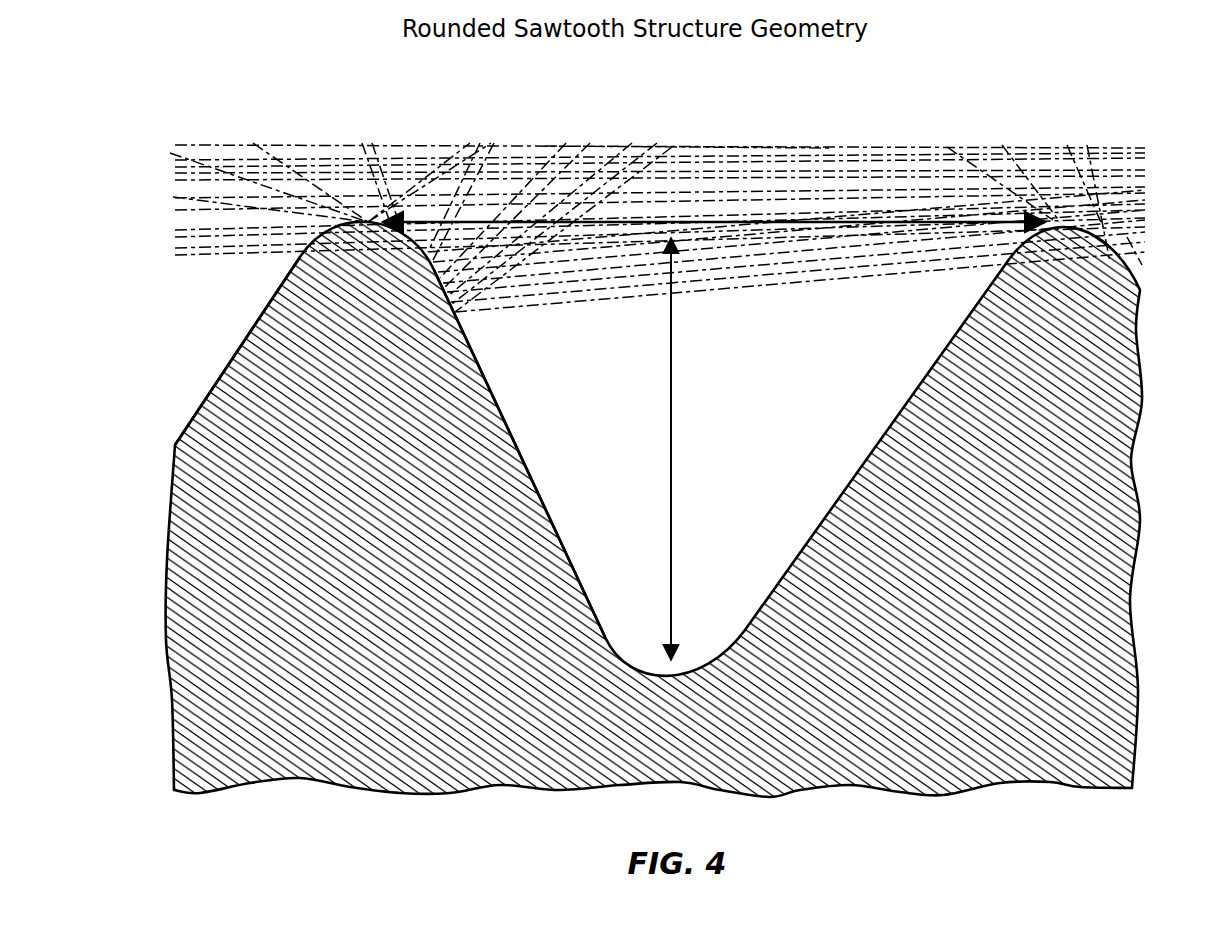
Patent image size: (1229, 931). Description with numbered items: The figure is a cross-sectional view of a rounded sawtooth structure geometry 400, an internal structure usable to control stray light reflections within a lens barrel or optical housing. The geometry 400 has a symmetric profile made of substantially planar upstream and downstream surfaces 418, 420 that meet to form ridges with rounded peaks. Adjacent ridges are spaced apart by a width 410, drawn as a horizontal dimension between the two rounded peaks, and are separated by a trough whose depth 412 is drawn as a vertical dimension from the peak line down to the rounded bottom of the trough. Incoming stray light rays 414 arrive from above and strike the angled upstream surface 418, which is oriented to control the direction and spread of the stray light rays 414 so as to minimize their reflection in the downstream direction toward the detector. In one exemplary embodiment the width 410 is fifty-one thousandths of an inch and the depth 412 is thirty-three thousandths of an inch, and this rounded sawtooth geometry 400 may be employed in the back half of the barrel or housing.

The rounded sawtooth structure geometry 400 is at (212, 108).
The width 410 is at (846, 222).
The depth 412 is at (670, 393).
The stray light rays 414 is at (1166, 122).
The upstream surface 418 is at (478, 372).
The downstream surface 420 is at (258, 322).